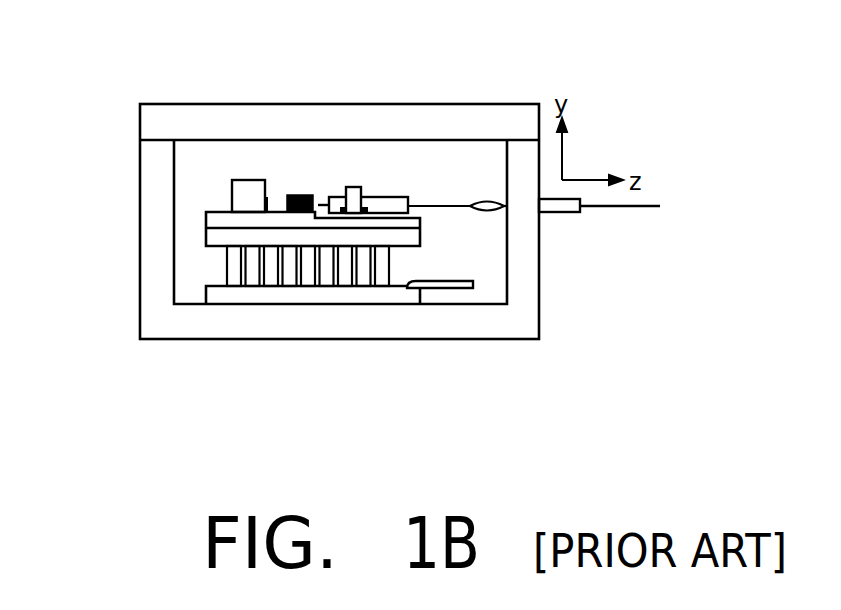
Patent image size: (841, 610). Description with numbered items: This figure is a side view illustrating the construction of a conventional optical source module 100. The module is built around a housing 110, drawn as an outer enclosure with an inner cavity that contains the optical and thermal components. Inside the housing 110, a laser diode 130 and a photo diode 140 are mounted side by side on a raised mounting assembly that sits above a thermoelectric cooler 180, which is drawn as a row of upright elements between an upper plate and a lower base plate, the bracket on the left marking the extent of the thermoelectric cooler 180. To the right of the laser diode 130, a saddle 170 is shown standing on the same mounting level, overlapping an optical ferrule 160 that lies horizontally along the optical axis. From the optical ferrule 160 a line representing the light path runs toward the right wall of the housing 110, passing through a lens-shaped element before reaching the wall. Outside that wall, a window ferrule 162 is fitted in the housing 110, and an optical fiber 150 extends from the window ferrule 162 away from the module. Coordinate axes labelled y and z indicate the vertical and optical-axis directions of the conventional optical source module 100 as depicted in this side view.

The optical source module 100 is at (425, 431).
The housing 110 is at (172, 327).
The laser diode 130 is at (300, 195).
The photo diode 140 is at (248, 193).
The optical fiber 150 is at (620, 212).
The optical ferrule 160 is at (392, 207).
The window ferrule 162 is at (562, 213).
The saddle 170 is at (355, 192).
The thermoelectric cooler 180 is at (203, 228).